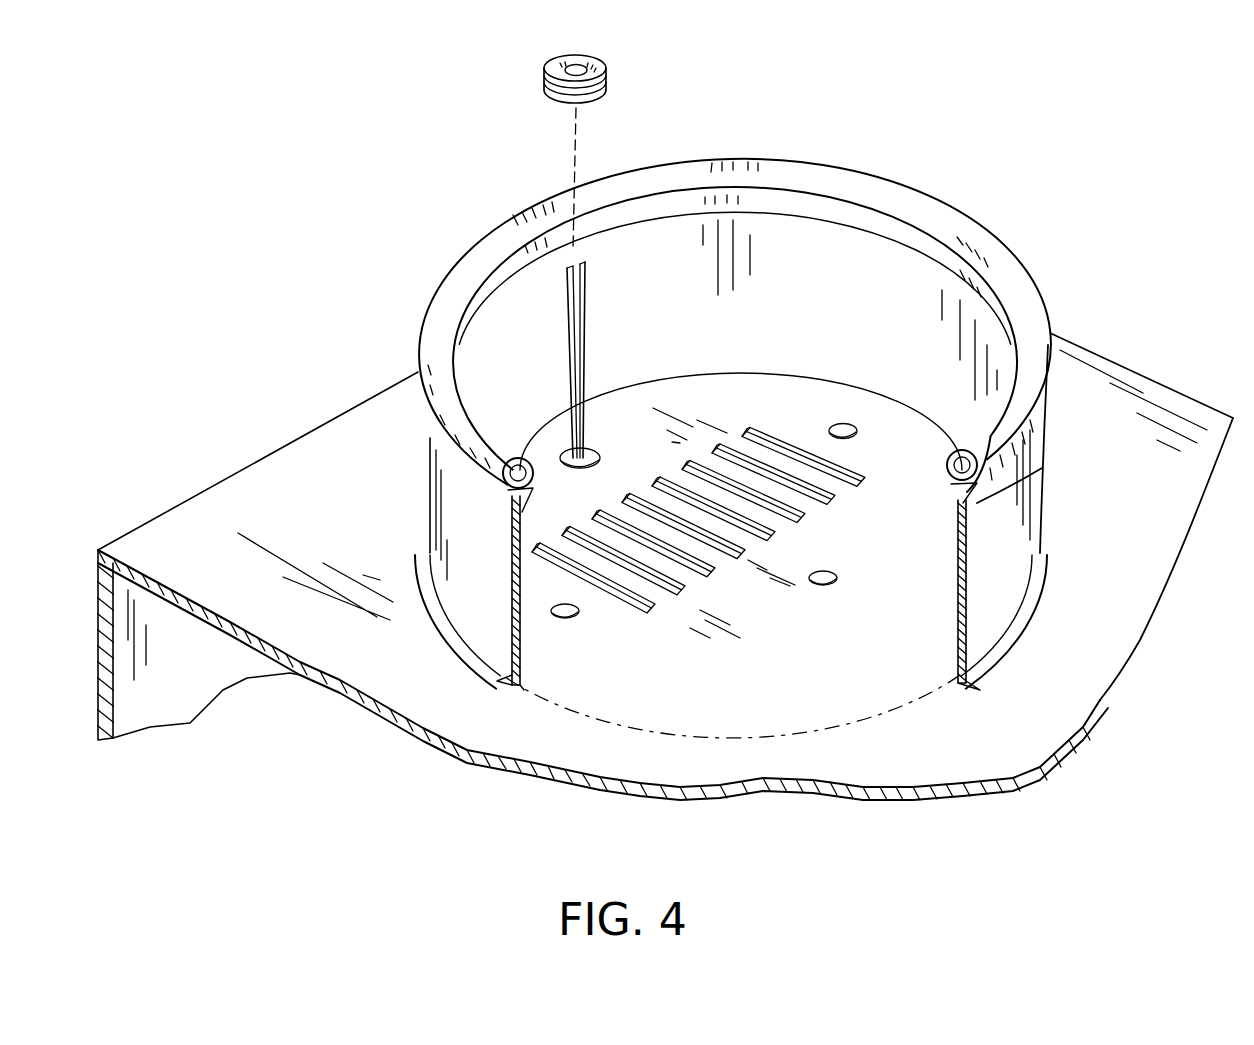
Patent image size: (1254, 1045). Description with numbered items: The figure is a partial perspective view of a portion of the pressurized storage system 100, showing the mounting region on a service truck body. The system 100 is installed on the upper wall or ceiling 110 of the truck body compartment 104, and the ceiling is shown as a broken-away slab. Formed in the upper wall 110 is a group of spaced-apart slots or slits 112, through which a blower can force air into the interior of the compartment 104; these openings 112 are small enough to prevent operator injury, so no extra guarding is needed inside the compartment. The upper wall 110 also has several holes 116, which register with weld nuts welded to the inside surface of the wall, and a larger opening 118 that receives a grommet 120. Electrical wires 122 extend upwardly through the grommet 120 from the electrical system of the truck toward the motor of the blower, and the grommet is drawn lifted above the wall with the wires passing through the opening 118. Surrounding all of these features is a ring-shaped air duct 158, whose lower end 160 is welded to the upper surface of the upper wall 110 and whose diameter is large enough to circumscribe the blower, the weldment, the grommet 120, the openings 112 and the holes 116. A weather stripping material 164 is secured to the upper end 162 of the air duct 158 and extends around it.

The pressurized storage system 100 is at (791, 308).
The truck body compartment 104 is at (277, 438).
The upper wall or ceiling 110 is at (345, 532).
The slots or slits 112 is at (750, 430).
The holes 116 is at (851, 426).
The larger opening 118 is at (603, 452).
The grommet 120 is at (605, 68).
The electrical wires 122 is at (563, 330).
The ring-shaped air duct 158 is at (1020, 547).
The lower end 160 is at (520, 690).
The upper end 162 is at (507, 494).
The weather stripping material 164 is at (1023, 314).